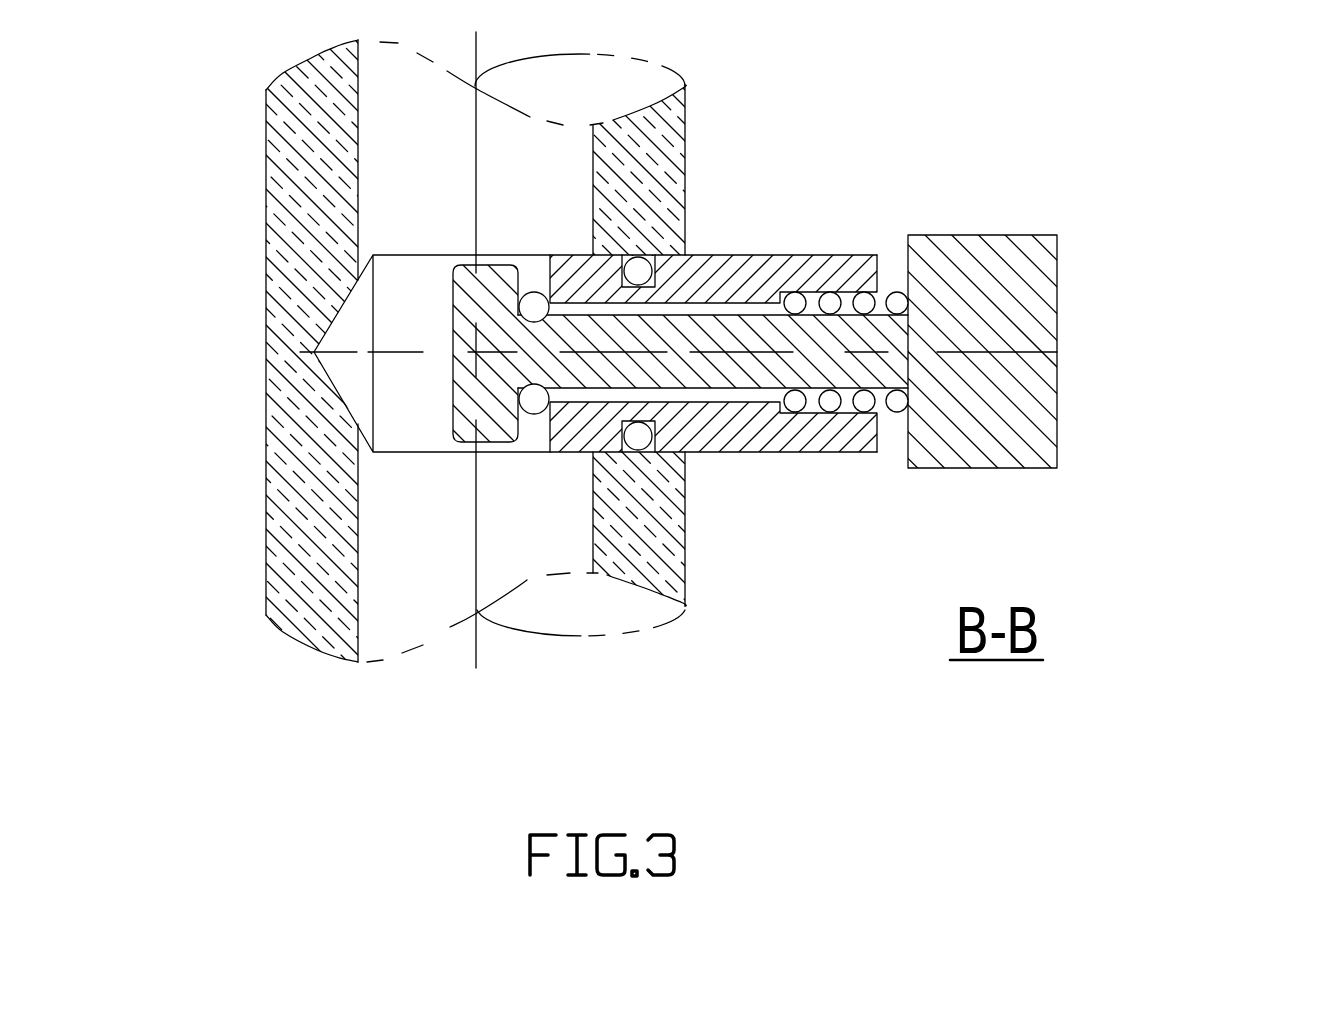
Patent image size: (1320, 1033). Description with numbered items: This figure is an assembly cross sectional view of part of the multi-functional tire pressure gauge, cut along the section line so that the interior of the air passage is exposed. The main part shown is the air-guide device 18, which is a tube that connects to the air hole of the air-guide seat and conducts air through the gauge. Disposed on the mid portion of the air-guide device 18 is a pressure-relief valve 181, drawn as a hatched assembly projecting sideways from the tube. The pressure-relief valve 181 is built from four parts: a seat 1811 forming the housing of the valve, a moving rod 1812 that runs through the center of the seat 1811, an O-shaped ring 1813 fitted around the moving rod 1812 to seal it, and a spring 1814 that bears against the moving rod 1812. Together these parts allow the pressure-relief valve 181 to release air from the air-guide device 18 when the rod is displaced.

The air-guide device 18 is at (297, 212).
The pressure-relief valve 181 is at (1087, 477).
The seat 1811 is at (835, 430).
The moving rod 1812 is at (737, 333).
The O-shaped ring 1813 is at (640, 433).
The spring 1814 is at (832, 297).